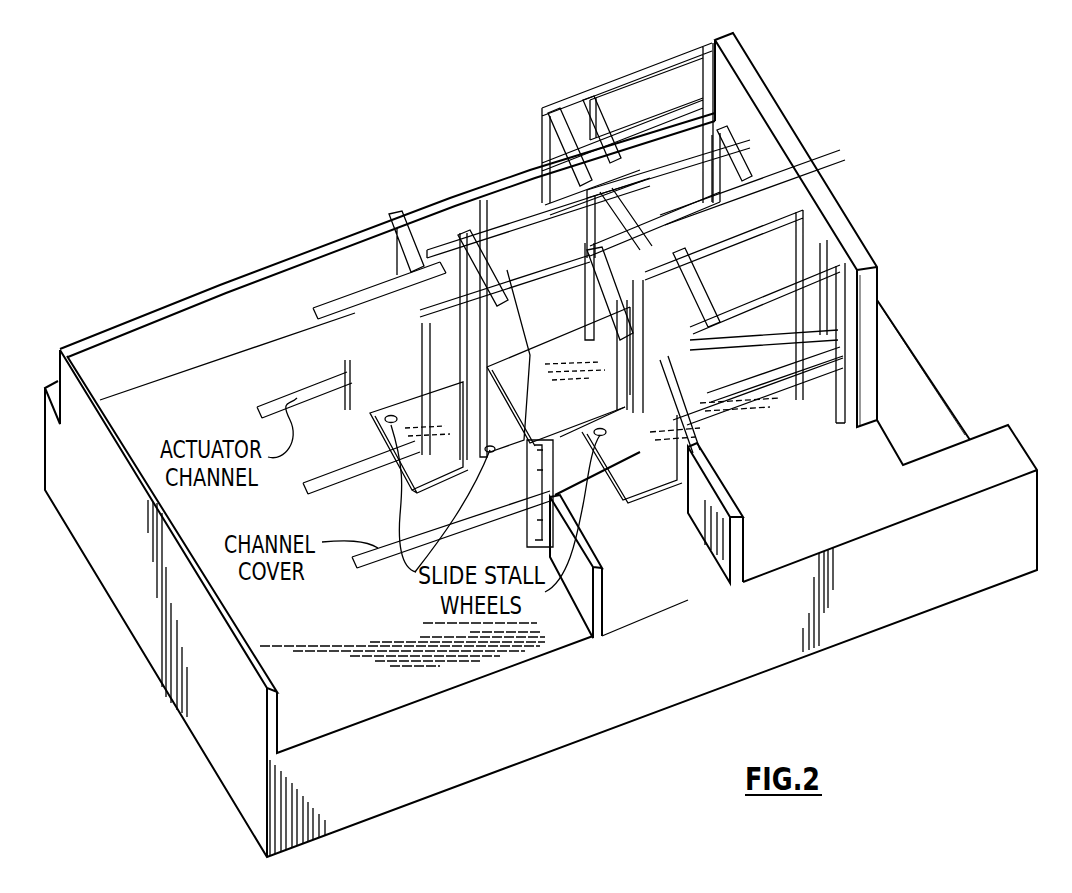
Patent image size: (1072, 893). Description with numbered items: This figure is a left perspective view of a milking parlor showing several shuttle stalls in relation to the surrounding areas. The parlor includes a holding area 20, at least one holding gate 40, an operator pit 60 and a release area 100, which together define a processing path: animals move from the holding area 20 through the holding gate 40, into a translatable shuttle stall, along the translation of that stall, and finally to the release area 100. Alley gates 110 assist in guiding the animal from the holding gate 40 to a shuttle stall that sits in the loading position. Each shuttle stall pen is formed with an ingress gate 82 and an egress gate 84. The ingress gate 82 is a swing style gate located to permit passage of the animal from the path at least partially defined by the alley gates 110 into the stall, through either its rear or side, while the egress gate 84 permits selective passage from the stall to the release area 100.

The holding area 20 is at (652, 573).
The holding gate 40 is at (685, 410).
The operator pit 60 is at (920, 400).
The ingress gate 82 is at (665, 262).
The egress gate 84 is at (318, 311).
The release area 100 is at (388, 618).
The alley gates 110 is at (395, 255).